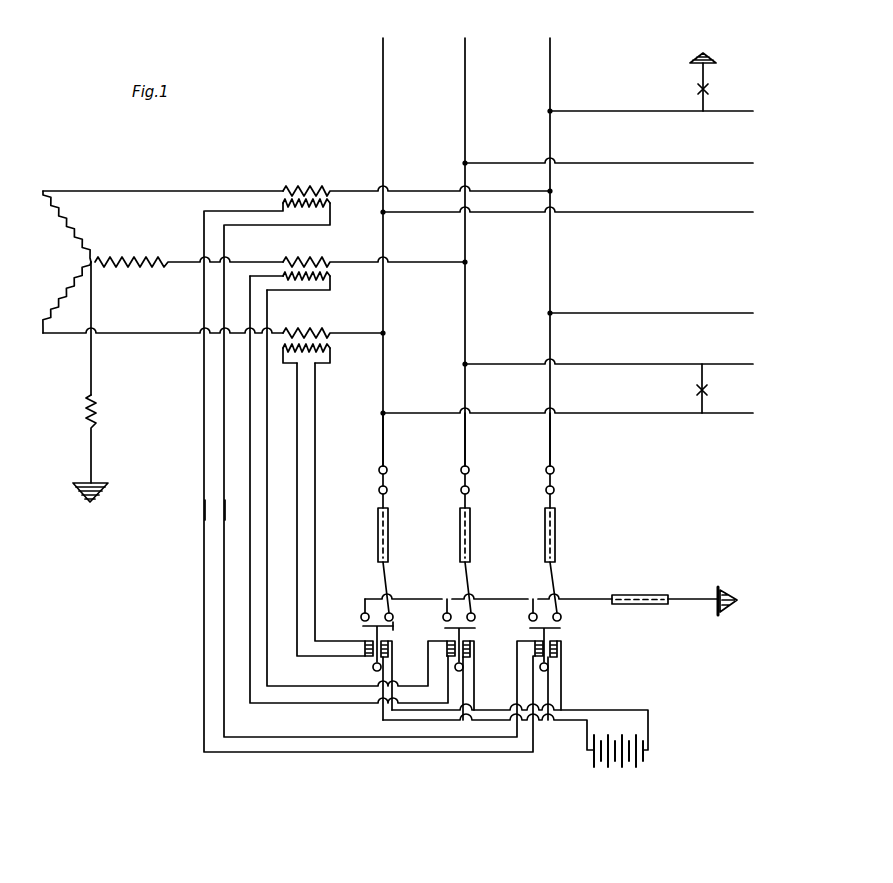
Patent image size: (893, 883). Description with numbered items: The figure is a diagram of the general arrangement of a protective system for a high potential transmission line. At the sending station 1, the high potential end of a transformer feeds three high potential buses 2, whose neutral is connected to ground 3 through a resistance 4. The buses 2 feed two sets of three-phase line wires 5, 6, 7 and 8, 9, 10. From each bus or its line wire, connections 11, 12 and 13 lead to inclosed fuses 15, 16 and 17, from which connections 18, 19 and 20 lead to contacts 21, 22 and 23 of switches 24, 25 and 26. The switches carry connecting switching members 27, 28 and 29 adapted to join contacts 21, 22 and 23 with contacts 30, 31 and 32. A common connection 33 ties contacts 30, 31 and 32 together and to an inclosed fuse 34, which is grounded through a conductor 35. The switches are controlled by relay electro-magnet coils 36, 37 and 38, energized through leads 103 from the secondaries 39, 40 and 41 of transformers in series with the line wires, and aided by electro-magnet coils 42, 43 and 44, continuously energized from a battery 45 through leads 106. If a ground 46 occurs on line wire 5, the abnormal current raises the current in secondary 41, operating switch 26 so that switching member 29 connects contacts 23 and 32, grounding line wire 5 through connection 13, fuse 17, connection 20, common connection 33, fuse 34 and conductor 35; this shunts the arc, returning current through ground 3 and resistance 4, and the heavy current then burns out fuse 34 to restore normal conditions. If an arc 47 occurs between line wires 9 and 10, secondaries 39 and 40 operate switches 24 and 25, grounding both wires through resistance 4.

The sending station 1 is at (77, 237).
The high potential buses 2 is at (383, 124).
The ground 3 is at (92, 468).
The resistance 4 is at (95, 414).
The line wire 5 is at (630, 112).
The line wire 6 is at (700, 163).
The line wire 7 is at (673, 212).
The line wire 8 is at (627, 314).
The line wire 9 is at (616, 365).
The line wire 10 is at (605, 414).
The connection 11 is at (384, 451).
The connection 12 is at (466, 446).
The connection 13 is at (551, 451).
The inclosed fuse 15 is at (389, 535).
The inclosed fuse 16 is at (471, 535).
The inclosed fuse 17 is at (556, 535).
The connection 18 is at (387, 580).
The connection 19 is at (469, 582).
The connection 20 is at (556, 585).
The contact 21 is at (394, 616).
The contact 22 is at (476, 617).
The contact 23 is at (562, 617).
The switch 24 is at (394, 626).
The switch 25 is at (476, 629).
The switch 26 is at (561, 629).
The switching member 27 is at (358, 628).
The switching member 28 is at (445, 628).
The switching member 29 is at (562, 628).
The contact 30 is at (361, 613).
The contact 31 is at (444, 613).
The contact 32 is at (529, 621).
The common connection 33 is at (374, 598).
The inclosed fuse 34 is at (641, 597).
The conductor 35 is at (691, 599).
The relay electro-magnet coil 36 is at (364, 648).
The relay electro-magnet coil 37 is at (452, 650).
The relay electro-magnet coil 38 is at (543, 648).
The secondary 39 is at (308, 352).
The secondary 40 is at (308, 282).
The secondary 41 is at (300, 206).
The electro-magnet coil 42 is at (379, 658).
The electro-magnet coil 43 is at (468, 658).
The electro-magnet coil 44 is at (557, 655).
The battery 45 is at (612, 766).
The ground 46 is at (712, 88).
The arc 47 is at (709, 391).
The leads 103 is at (267, 564).
The leads 106 is at (616, 710).